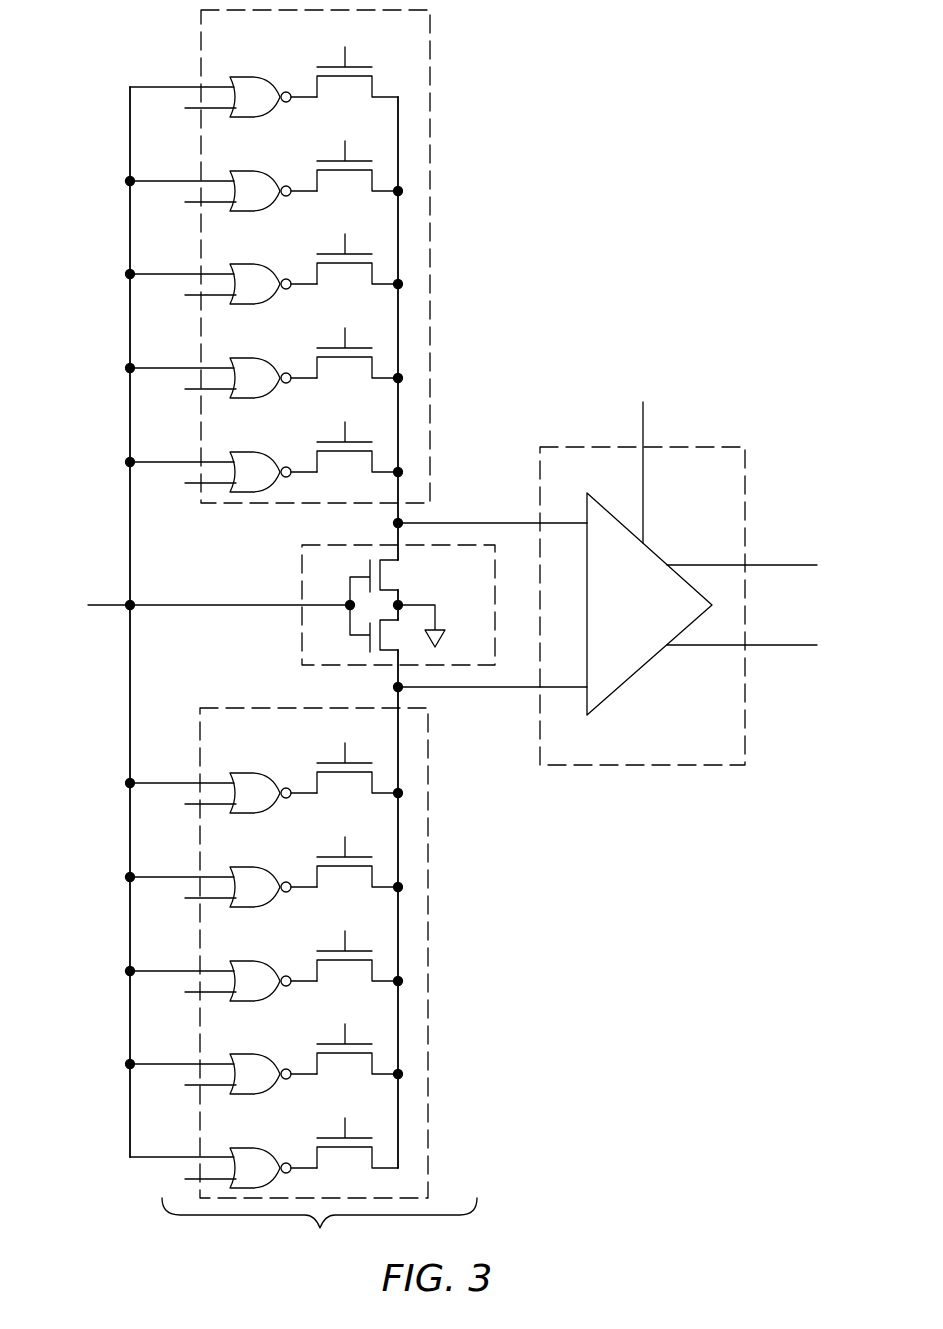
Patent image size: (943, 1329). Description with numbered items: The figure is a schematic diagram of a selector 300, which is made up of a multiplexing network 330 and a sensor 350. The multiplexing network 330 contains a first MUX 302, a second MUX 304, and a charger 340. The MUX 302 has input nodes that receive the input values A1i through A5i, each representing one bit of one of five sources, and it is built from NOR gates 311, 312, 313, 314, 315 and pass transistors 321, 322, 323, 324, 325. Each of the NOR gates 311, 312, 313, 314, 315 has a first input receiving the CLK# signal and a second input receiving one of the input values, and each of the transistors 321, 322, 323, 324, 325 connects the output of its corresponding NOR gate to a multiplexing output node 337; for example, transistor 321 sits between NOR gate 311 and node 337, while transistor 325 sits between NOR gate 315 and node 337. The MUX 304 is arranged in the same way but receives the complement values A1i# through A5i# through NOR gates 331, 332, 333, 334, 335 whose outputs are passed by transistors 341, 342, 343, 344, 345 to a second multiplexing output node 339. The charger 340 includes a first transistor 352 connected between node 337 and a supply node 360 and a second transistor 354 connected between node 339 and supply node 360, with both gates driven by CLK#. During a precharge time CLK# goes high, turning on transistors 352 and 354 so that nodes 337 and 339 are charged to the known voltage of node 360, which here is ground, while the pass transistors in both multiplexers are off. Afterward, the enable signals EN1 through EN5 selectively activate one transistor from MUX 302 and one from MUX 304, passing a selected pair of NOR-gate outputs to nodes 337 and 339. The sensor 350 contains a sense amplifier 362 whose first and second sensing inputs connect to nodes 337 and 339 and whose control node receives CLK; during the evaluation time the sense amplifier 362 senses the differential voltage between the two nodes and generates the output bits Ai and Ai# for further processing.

The selector 300 is at (648, 67).
The MUX 302 is at (430, 40).
The MUX 304 is at (428, 740).
The NOR gate 311 is at (223, 100).
The NOR gate 312 is at (222, 194).
The NOR gate 313 is at (222, 287).
The NOR gate 314 is at (222, 381).
The NOR gate 315 is at (222, 475).
The pass transistor 321 is at (357, 62).
The pass transistor 322 is at (360, 157).
The pass transistor 323 is at (360, 250).
The pass transistor 324 is at (360, 344).
The pass transistor 325 is at (360, 438).
The multiplexing network 330 is at (319, 1228).
The NOR gate 331 is at (222, 796).
The NOR gate 332 is at (222, 890).
The NOR gate 333 is at (222, 984).
The NOR gate 334 is at (222, 1077).
The NOR gate 335 is at (223, 1171).
The multiplexing output node 337 is at (394, 523).
The multiplexing output node 339 is at (394, 687).
The charger 340 is at (317, 545).
The pass transistor 341 is at (360, 759).
The pass transistor 342 is at (360, 853).
The pass transistor 343 is at (360, 947).
The pass transistor 344 is at (360, 1040).
The pass transistor 345 is at (357, 1133).
The sensor 350 is at (740, 447).
The first transistor 352 is at (380, 582).
The second transistor 354 is at (380, 628).
The supply node 360 is at (442, 628).
The sense amplifier 362 is at (650, 660).